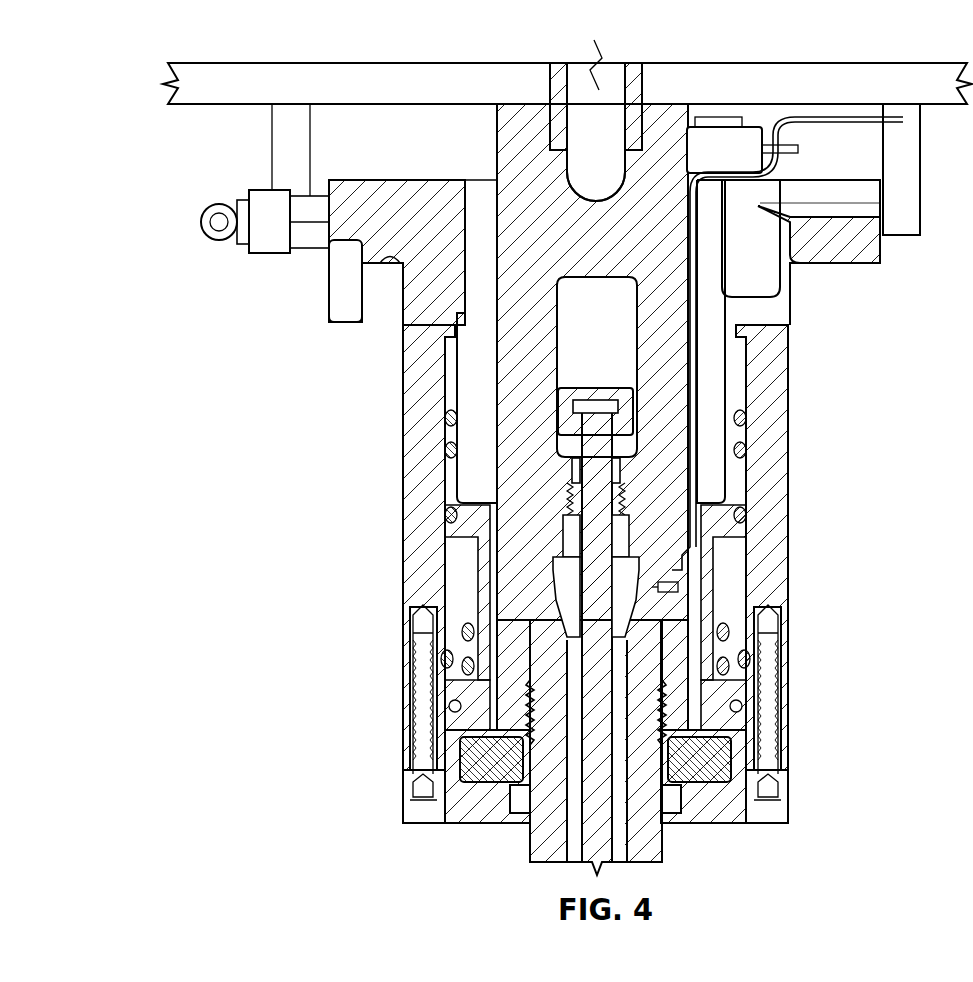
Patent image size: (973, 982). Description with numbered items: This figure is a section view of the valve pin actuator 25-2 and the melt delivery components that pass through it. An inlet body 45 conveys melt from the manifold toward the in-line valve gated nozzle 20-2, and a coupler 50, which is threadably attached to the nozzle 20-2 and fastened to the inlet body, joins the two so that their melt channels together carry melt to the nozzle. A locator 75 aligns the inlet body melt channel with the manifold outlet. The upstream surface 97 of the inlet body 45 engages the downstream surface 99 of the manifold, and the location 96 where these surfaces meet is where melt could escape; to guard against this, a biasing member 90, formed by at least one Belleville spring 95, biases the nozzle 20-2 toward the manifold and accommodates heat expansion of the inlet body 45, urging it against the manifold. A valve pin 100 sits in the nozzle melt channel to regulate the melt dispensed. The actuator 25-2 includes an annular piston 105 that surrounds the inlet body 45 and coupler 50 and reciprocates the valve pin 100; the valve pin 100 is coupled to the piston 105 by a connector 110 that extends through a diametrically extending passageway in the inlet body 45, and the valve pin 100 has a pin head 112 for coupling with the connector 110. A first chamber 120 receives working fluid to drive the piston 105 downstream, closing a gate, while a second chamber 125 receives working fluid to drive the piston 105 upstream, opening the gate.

The in-line valve gated nozzle 20-2 is at (667, 843).
The valve pin actuator 25-2 is at (529, 468).
The inlet body 45 is at (497, 400).
The coupler 50 is at (483, 698).
The locator 75 is at (548, 88).
The biasing member 90 is at (737, 757).
The Belleville spring 95 is at (733, 777).
The location 96 is at (497, 103).
The upstream surface 97 is at (653, 100).
The downstream surface 99 is at (667, 106).
The valve pin 100 is at (577, 795).
The piston 105 is at (760, 522).
The connector 110 is at (652, 418).
The pin head 112 is at (612, 413).
The first chamber 120 is at (443, 485).
The second chamber 125 is at (455, 592).